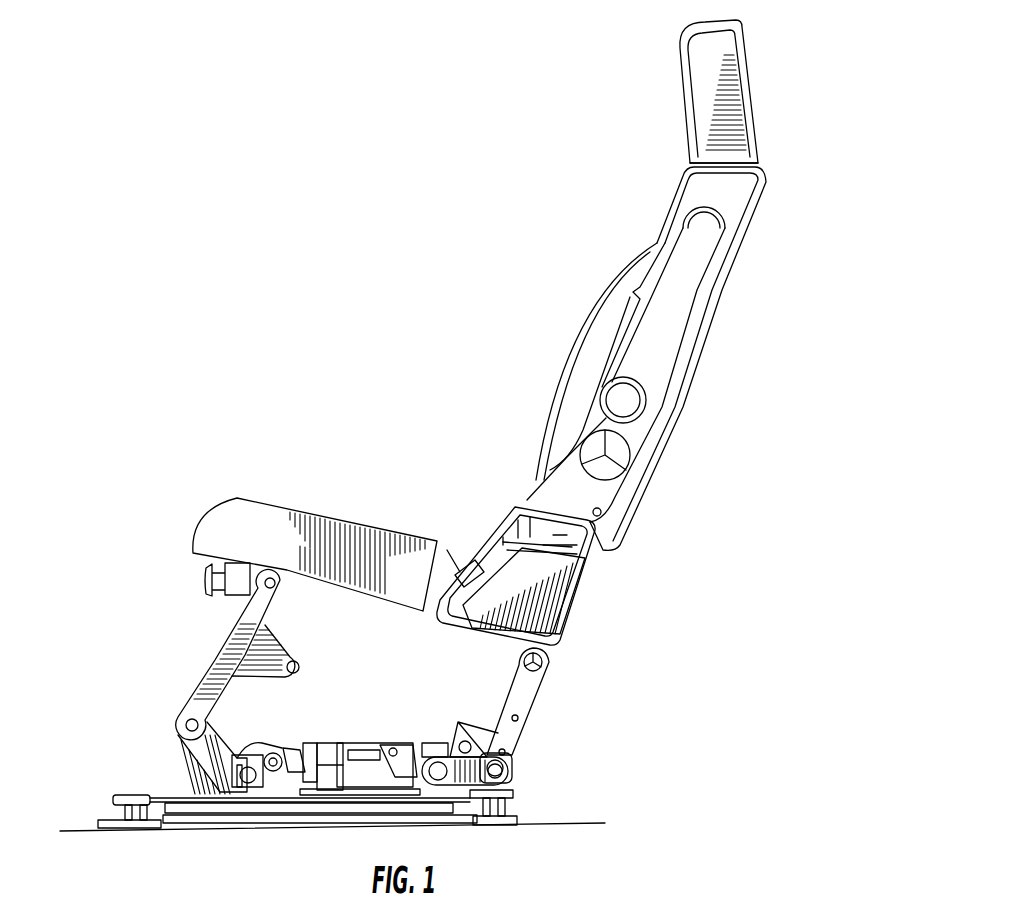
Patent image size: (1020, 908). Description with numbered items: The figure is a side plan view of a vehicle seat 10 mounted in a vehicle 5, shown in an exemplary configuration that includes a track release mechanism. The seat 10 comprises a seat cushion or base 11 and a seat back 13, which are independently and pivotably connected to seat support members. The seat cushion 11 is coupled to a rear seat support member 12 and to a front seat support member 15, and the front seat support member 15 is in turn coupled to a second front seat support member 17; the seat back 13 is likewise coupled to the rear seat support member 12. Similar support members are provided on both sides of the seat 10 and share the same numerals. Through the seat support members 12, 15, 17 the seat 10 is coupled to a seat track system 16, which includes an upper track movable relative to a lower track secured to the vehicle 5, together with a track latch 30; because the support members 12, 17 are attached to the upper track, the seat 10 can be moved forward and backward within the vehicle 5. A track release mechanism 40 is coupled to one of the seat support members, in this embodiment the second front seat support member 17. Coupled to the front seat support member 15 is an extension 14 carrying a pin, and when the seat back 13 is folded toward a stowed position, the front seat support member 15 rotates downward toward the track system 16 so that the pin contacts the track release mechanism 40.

The vehicle seat 10 is at (762, 373).
The seat cushion 11 is at (312, 510).
The rear seat support member 12 is at (537, 705).
The seat back 13 is at (708, 245).
The extension 14 is at (298, 660).
The front seat support member 15 is at (213, 673).
The seat track system 16 is at (540, 800).
The second front seat support member 17 is at (200, 747).
The track latch 30 is at (407, 735).
The track release mechanism 40 is at (283, 740).
The vehicle 5 is at (605, 821).